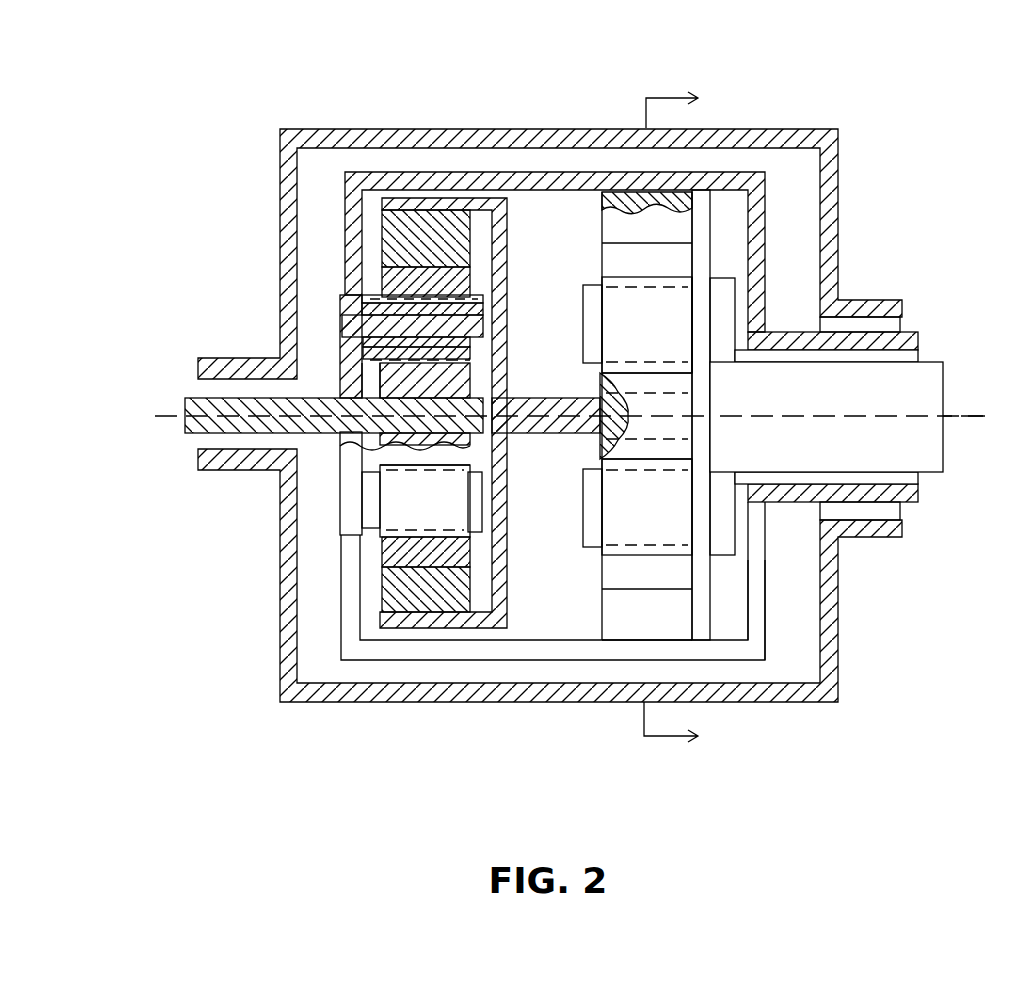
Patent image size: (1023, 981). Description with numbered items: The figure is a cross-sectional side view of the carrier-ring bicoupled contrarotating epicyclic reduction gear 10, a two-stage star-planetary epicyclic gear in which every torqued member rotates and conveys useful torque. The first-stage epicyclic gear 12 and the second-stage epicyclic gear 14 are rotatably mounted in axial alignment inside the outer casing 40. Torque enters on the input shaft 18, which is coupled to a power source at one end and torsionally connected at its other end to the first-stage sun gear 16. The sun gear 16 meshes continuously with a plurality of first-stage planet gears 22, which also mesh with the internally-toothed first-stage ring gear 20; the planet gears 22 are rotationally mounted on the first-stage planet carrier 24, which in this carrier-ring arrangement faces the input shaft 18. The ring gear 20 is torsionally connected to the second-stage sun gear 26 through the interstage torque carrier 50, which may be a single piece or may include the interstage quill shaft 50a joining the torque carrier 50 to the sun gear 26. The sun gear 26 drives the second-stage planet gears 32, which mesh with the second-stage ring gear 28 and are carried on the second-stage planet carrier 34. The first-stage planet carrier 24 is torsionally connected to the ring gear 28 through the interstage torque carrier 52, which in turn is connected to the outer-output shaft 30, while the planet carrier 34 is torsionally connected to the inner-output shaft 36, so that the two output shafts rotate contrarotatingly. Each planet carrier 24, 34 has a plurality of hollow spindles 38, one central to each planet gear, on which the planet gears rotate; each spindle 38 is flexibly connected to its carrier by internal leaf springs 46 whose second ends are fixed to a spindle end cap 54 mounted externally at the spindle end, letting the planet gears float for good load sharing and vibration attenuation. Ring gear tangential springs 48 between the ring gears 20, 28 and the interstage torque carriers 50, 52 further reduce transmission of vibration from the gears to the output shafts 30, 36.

The carrier-ring bicoupled contrarotating epicyclic reduction gear 10 is at (576, 423).
The first-stage epicyclic gear 12 is at (365, 122).
The second-stage epicyclic gear 14 is at (618, 122).
The first-stage sun gear 16 is at (422, 450).
The input shaft 18 is at (185, 405).
The first-stage ring gear 20 is at (460, 282).
The first-stage planet gears 22 is at (462, 309).
The first-stage planet carrier 24 is at (352, 364).
The second-stage sun gear 26 is at (650, 455).
The second-stage ring gear 28 is at (675, 258).
The outer-output shaft 30 is at (918, 340).
The second-stage planet gears 32 is at (682, 302).
The second-stage planet carrier 34 is at (723, 338).
The inner-output shaft 36 is at (945, 388).
The spindles 38 is at (435, 343).
The outer casing 40 is at (902, 308).
The internal leaf springs 46 is at (373, 300).
The ring gear tangential springs 48 is at (463, 228).
The interstage torque carrier 50 is at (505, 601).
The interstage quill shaft 50a is at (560, 424).
The interstage torque carrier 52 is at (752, 588).
The spindle end cap 54 is at (477, 343).